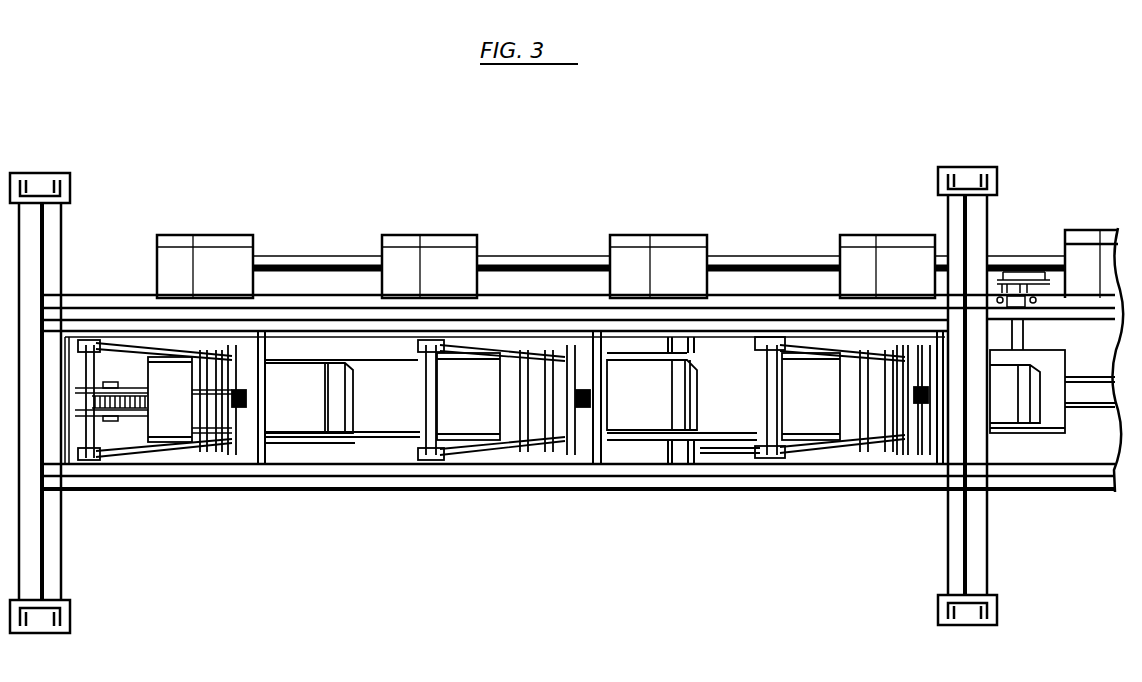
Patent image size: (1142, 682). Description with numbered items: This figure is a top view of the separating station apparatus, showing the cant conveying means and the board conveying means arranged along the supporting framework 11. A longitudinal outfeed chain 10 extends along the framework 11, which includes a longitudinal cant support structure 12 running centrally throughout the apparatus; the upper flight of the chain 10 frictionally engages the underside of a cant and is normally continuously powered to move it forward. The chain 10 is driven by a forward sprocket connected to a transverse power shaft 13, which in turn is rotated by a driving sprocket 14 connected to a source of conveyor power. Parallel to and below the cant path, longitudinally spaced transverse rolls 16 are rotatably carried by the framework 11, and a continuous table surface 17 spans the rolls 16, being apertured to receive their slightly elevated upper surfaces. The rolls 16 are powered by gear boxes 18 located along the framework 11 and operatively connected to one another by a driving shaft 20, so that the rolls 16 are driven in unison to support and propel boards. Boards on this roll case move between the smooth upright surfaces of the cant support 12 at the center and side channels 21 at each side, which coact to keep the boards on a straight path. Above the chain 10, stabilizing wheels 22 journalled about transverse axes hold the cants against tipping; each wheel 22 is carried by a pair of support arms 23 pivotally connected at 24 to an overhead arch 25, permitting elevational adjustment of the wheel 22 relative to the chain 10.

The longitudinal outfeed chain 10 is at (148, 383).
The supporting framework 11 is at (318, 491).
The longitudinal cant support structure 12 is at (1104, 404).
The transverse power shaft 13 is at (1016, 339).
The driving sprocket 14 is at (1032, 282).
The transverse rolls 16 is at (222, 458).
The continuous table surface 17 is at (740, 452).
The gear boxes 18 is at (232, 287).
The driving shaft 20 is at (291, 262).
The side channels 21 is at (568, 298).
The wheels 22 is at (312, 405).
The support arms 23 is at (172, 440).
The pivotal connection 24 is at (88, 460).
The overhead arch 25 is at (148, 316).